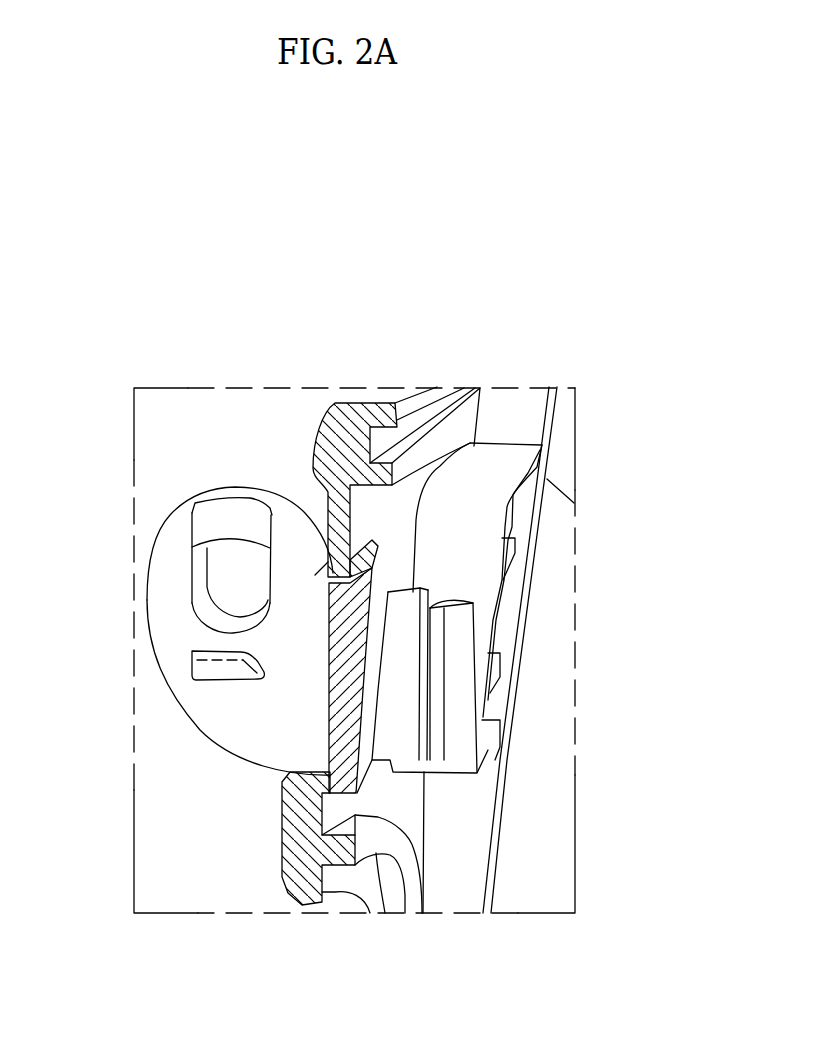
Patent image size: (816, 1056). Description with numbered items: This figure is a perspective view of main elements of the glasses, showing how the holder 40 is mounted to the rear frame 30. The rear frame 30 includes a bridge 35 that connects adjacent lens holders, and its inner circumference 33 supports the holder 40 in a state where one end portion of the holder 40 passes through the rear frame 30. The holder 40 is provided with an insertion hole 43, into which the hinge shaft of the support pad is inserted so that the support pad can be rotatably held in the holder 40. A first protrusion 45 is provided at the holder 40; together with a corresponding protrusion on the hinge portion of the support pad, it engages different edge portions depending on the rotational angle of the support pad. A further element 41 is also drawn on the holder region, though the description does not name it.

The rear frame 30 is at (530, 740).
The inner circumference 33 is at (343, 572).
The bridge 35 is at (320, 430).
The holder 40 is at (170, 492).
The protrusion 41 is at (347, 650).
The insertion hole 43 is at (236, 566).
The first protrusion 45 is at (192, 660).